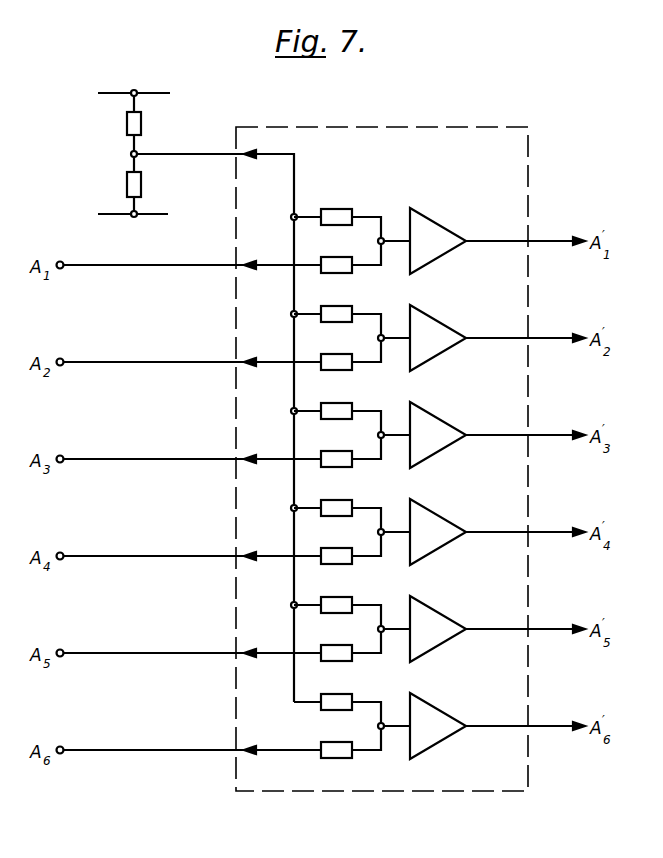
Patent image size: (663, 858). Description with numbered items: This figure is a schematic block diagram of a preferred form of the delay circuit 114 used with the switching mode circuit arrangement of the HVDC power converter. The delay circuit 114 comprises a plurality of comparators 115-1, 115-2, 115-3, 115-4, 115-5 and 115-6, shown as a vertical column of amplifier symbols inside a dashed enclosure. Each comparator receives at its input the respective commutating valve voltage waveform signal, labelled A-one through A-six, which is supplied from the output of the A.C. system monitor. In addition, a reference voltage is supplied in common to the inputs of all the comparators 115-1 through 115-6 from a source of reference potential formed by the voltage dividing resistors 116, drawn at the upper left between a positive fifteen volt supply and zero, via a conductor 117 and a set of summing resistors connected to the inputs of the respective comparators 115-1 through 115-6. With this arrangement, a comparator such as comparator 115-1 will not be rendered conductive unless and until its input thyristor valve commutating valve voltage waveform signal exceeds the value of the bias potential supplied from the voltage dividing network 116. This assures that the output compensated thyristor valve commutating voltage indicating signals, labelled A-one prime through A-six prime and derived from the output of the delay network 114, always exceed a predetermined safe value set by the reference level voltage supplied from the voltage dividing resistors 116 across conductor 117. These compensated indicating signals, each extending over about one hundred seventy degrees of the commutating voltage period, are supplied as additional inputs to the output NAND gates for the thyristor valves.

The delay circuit 114 is at (434, 127).
The comparator 115-1 is at (436, 221).
The comparator 115-2 is at (436, 318).
The comparator 115-3 is at (436, 415).
The comparator 115-4 is at (436, 512).
The comparator 115-5 is at (436, 609).
The comparator 115-6 is at (436, 706).
The voltage dividing resistors 116 is at (142, 123).
The conductor 117 is at (215, 160).